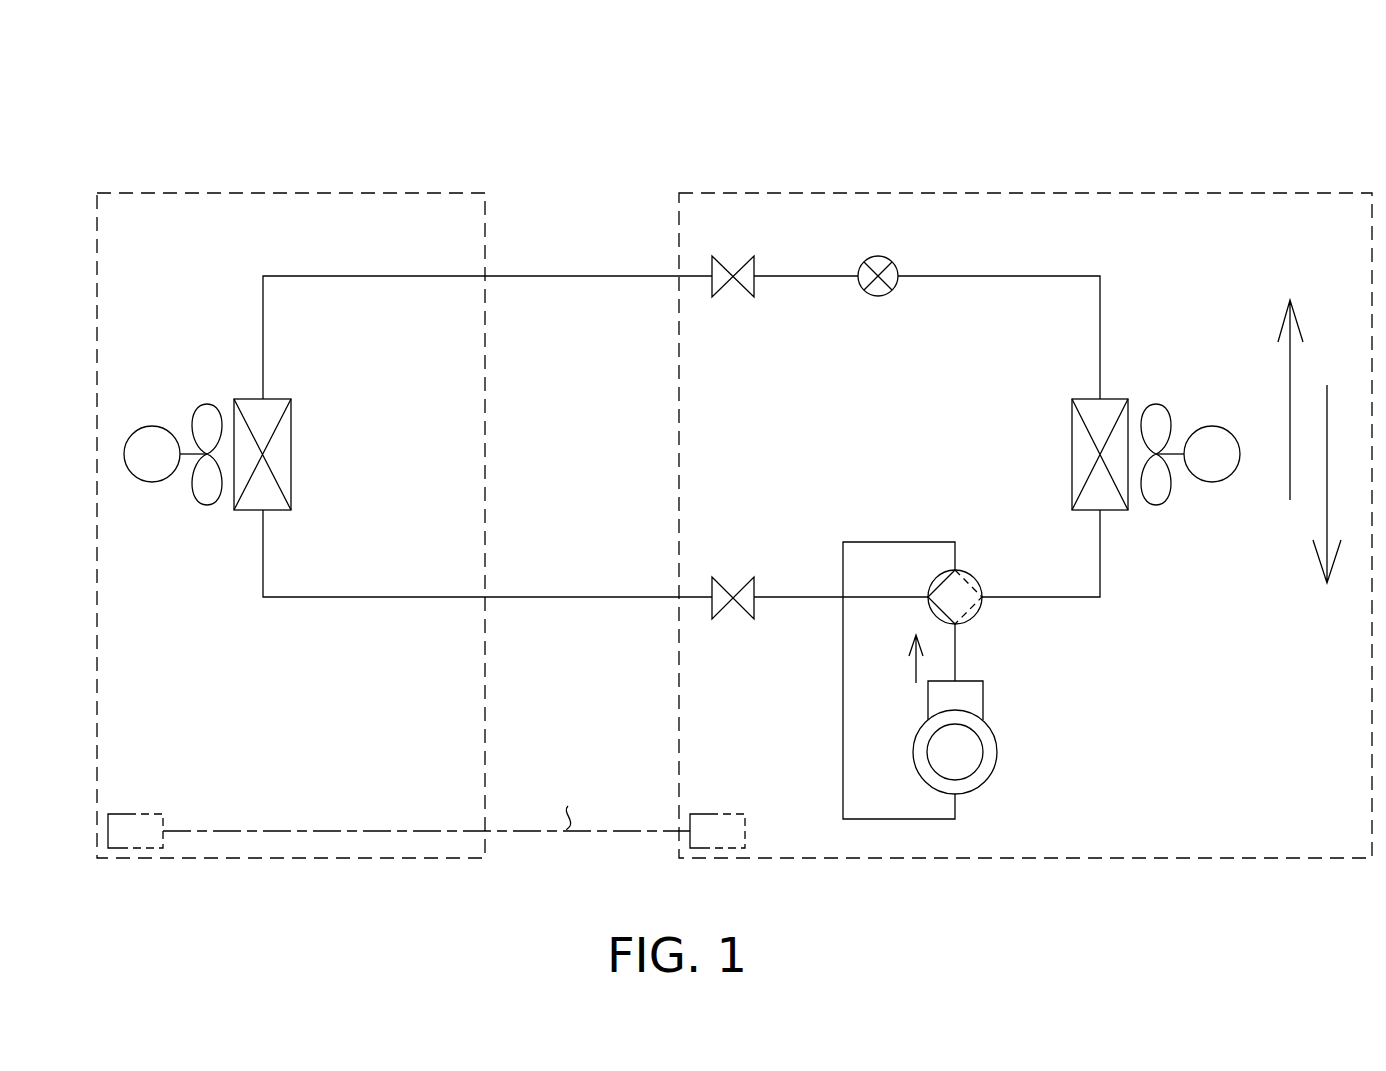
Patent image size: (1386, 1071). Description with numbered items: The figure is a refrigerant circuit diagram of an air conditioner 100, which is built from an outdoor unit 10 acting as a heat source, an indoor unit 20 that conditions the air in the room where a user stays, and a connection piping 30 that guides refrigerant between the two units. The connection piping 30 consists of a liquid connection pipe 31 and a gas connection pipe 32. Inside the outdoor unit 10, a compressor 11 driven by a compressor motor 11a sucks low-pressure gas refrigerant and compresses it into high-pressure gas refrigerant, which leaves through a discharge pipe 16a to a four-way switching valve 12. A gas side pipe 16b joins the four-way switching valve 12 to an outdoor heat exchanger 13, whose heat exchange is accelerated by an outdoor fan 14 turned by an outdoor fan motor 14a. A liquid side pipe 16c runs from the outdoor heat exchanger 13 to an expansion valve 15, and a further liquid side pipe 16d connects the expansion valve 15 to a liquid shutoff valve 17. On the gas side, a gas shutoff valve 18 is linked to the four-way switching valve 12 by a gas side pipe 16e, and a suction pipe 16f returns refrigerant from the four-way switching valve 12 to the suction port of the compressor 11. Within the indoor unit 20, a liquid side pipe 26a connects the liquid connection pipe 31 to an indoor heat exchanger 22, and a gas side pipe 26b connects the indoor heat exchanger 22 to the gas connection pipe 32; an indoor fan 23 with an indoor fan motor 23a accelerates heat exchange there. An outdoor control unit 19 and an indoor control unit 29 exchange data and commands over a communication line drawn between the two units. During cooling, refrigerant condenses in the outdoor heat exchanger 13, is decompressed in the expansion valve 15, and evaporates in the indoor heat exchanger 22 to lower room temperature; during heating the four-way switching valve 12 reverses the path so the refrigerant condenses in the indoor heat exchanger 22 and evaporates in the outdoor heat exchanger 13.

The air conditioner 100 is at (1284, 120).
The outdoor unit 10 is at (901, 192).
The indoor unit 20 is at (318, 192).
The connection piping 30 is at (598, 221).
The liquid connection pipe 31 is at (570, 276).
The gas connection pipe 32 is at (570, 597).
The compressor 11 is at (997, 746).
The compressor motor 11a is at (975, 770).
The four-way switching valve 12 is at (975, 580).
The outdoor heat exchanger 13 is at (1072, 454).
The outdoor fan 14 is at (1170, 420).
The outdoor fan motor 14a is at (1212, 482).
The expansion valve 15 is at (880, 296).
The discharge pipe 16a is at (955, 652).
The gas side pipe 16b is at (1100, 575).
The liquid side pipe 16c is at (1100, 335).
The liquid side pipe 16d is at (804, 278).
The gas side pipe 16e is at (804, 598).
The suction pipe 16f is at (843, 706).
The liquid shutoff valve 17 is at (745, 264).
The gas shutoff valve 18 is at (745, 583).
The outdoor control unit 19 is at (718, 814).
The indoor heat exchanger 22 is at (291, 454).
The indoor fan 23 is at (190, 418).
The indoor fan motor 23a is at (152, 482).
The liquid side pipe 26a is at (384, 278).
The gas side pipe 26b is at (384, 598).
The indoor control unit 29 is at (137, 814).